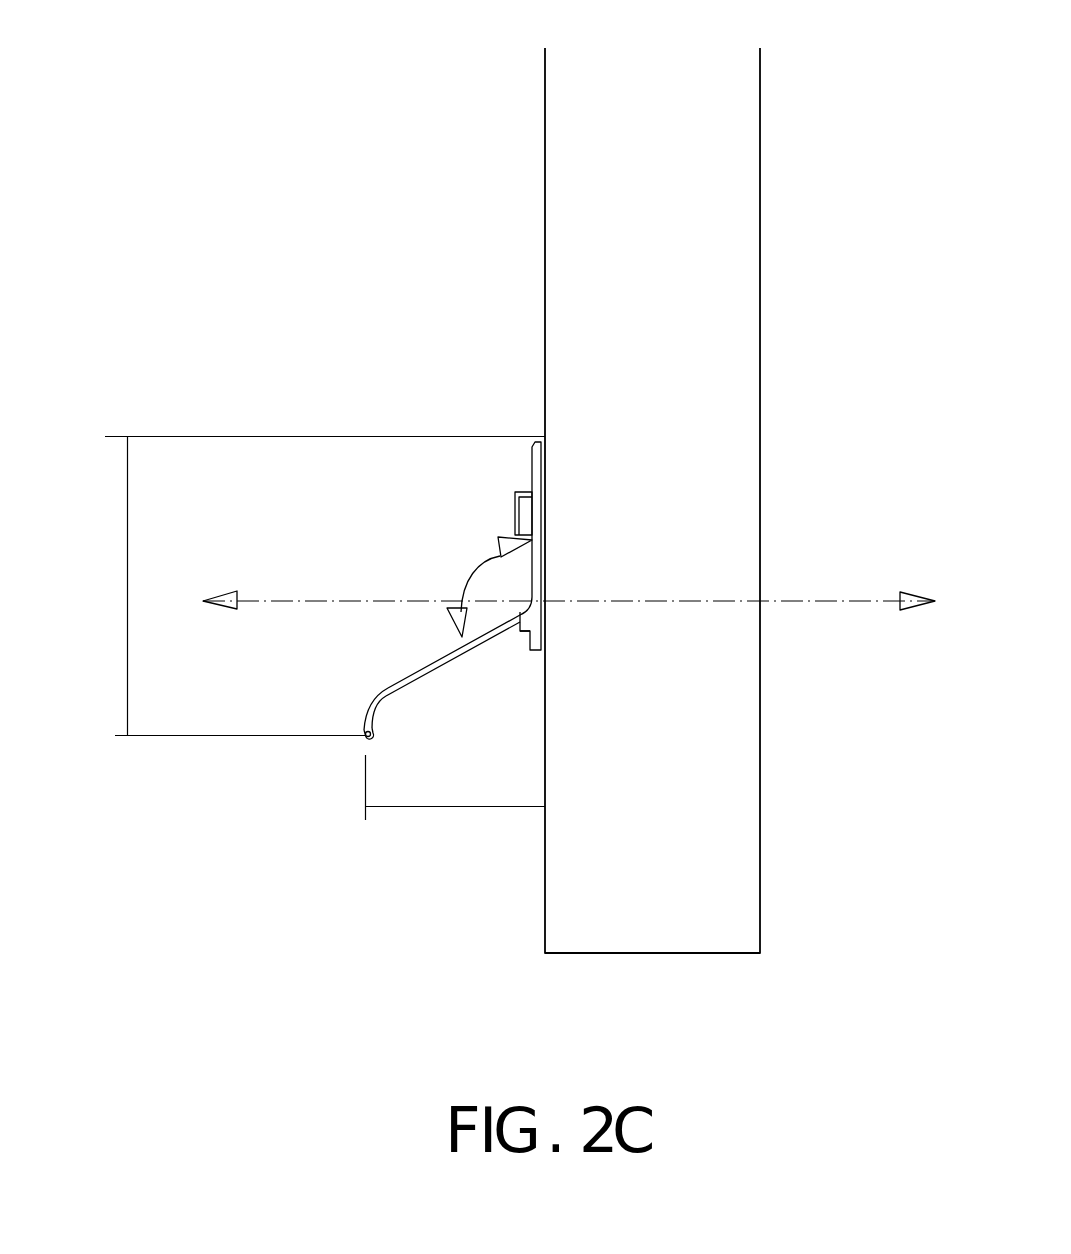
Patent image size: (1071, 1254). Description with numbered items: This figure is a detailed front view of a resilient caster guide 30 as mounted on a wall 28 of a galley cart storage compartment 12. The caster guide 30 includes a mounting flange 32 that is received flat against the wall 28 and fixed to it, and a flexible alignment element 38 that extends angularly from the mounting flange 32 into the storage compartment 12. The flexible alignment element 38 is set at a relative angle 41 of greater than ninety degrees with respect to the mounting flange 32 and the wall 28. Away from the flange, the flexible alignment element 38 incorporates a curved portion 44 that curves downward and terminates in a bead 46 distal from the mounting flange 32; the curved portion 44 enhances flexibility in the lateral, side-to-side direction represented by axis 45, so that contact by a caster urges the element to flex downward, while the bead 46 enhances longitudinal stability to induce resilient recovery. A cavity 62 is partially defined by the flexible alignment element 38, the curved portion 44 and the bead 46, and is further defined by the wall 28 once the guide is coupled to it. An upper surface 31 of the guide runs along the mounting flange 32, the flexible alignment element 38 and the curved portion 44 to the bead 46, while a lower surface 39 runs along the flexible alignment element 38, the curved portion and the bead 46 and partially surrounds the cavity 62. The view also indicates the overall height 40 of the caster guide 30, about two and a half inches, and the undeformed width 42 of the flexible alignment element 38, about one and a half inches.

The wall 28 is at (543, 138).
The galley cart storage compartment 12 is at (281, 186).
The resilient caster guide 30 is at (536, 443).
The mounting flange 32 is at (535, 480).
The relative angle 41 is at (480, 568).
The upper surface 31 is at (450, 645).
The flexible alignment element 38 is at (417, 667).
The cavity 62 is at (508, 694).
The lower surface 39 is at (463, 645).
The curved portion 44 is at (387, 692).
The bead 46 is at (370, 737).
The overall height 40 is at (127, 545).
The undeformed width 42 is at (458, 806).
The lateral axis 45 is at (845, 601).